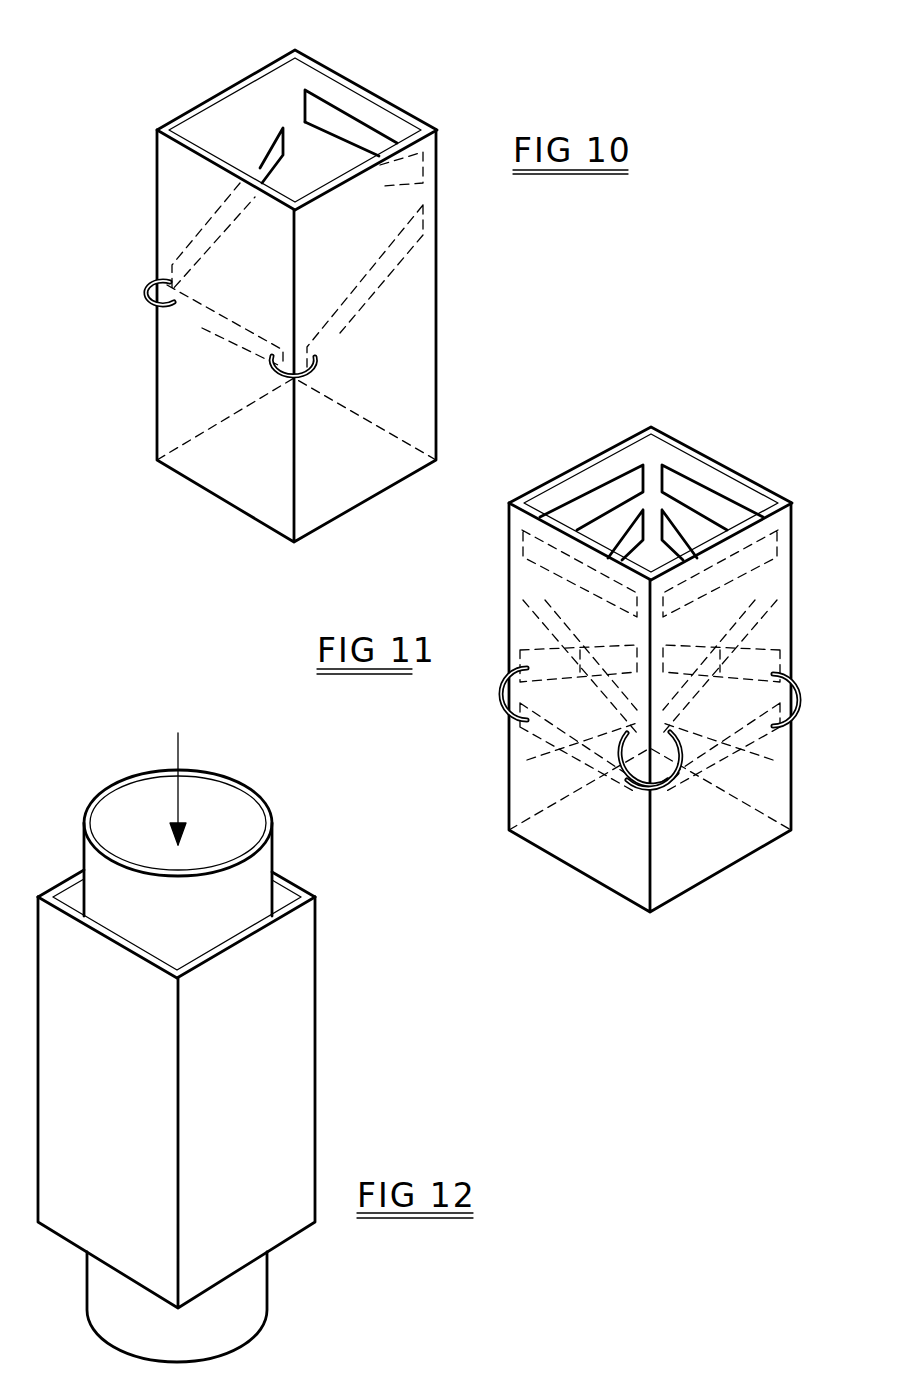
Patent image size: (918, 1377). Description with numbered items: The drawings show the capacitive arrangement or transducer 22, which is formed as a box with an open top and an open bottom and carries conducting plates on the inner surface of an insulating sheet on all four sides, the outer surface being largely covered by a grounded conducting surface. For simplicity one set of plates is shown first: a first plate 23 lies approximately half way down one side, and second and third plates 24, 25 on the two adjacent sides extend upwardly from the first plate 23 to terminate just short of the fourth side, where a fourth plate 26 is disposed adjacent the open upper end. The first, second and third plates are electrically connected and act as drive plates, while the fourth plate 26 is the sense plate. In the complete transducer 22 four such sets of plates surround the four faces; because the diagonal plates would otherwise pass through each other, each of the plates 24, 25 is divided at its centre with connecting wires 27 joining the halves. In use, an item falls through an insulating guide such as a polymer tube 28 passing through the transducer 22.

In FIG. 10, the capacitive arrangement or transducer 22 is at (403, 347).
In FIG. 11, the capacitive arrangement or transducer 22 is at (753, 780).
In FIG. 12, the capacitive arrangement or transducer 22 is at (277, 1032).
In FIG. 10, the first plate 23 is at (202, 328).
In FIG. 11, the first plate 23 is at (610, 767).
In FIG. 10, the second plate 24 is at (340, 336).
In FIG. 11, the second plate 24 is at (527, 760).
In FIG. 10, the third plate 25 is at (258, 165).
In FIG. 11, the third plate 25 is at (510, 621).
In FIG. 10, the fourth plate 26 is at (358, 133).
In FIG. 11, the fourth plate 26 is at (683, 492).
In FIG. 10, the connecting wires 27 is at (146, 283).
In FIG. 11, the connecting wires 27 is at (497, 718).
In FIG. 12, the polymer tube 28 is at (242, 880).